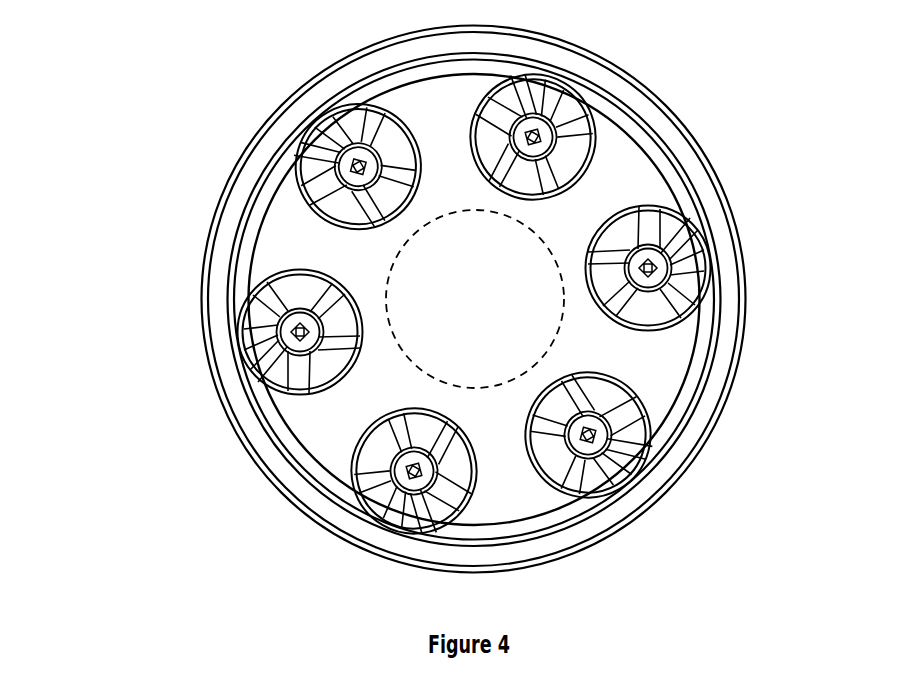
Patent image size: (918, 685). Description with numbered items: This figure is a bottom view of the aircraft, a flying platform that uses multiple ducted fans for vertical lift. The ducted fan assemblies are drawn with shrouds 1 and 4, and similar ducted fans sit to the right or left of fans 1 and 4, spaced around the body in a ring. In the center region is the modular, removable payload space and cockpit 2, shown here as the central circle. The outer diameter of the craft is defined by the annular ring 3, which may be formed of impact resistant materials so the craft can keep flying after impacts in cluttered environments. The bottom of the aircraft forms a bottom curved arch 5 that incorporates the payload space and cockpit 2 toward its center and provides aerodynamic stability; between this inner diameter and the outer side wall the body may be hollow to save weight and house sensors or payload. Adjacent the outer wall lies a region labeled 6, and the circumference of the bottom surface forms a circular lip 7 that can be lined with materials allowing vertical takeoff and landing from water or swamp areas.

The ducted fan shroud 1 is at (318, 135).
The removable payload space and cockpit 2 is at (486, 296).
The annular ring 3 is at (198, 315).
The ducted fan shroud 4 is at (652, 405).
The bottom curved arch 5 is at (325, 433).
The inner wall 6 is at (670, 457).
The circular lip 7 is at (552, 533).